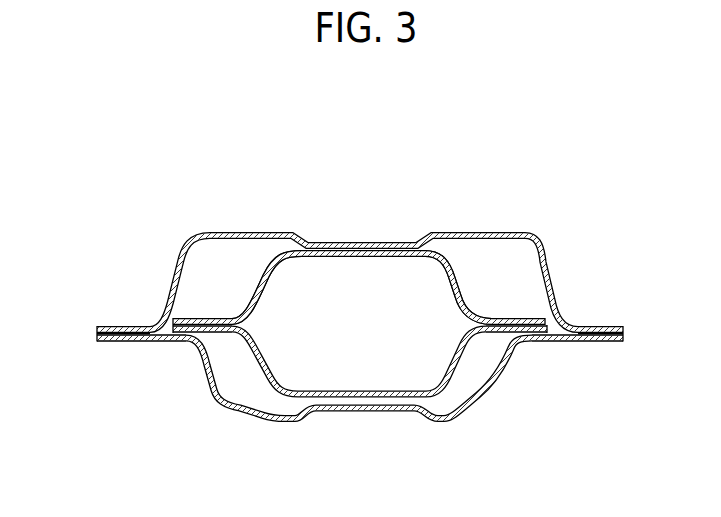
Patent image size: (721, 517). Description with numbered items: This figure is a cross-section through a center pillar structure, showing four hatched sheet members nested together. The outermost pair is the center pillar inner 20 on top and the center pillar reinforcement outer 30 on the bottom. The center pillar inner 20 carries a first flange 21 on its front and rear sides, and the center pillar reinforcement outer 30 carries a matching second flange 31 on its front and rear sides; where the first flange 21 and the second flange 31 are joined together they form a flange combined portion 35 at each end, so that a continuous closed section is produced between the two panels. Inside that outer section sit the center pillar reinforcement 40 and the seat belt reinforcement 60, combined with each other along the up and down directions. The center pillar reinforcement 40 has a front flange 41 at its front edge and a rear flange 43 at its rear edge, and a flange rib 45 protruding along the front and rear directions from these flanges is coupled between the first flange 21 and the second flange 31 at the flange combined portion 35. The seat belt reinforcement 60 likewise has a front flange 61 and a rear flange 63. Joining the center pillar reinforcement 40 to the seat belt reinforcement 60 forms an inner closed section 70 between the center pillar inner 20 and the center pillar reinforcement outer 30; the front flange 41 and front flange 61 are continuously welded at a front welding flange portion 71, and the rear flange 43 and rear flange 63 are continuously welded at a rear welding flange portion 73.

The center pillar inner 20 is at (550, 222).
The first flange 21 is at (110, 327).
The center pillar reinforcement outer 30 is at (212, 420).
The second flange 31 is at (103, 345).
The flange combined portion 35 is at (84, 333).
The center pillar reinforcement 40 is at (455, 410).
The front flange 41 is at (193, 334).
The rear flange 43 is at (533, 345).
The flange rib 45 is at (137, 344).
The seat belt reinforcement 60 is at (450, 238).
The front flange 61 is at (215, 318).
The rear flange 63 is at (518, 320).
The inner closed section 70 is at (357, 266).
The front welding flange portion 71 is at (192, 300).
The rear welding flange portion 73 is at (560, 305).